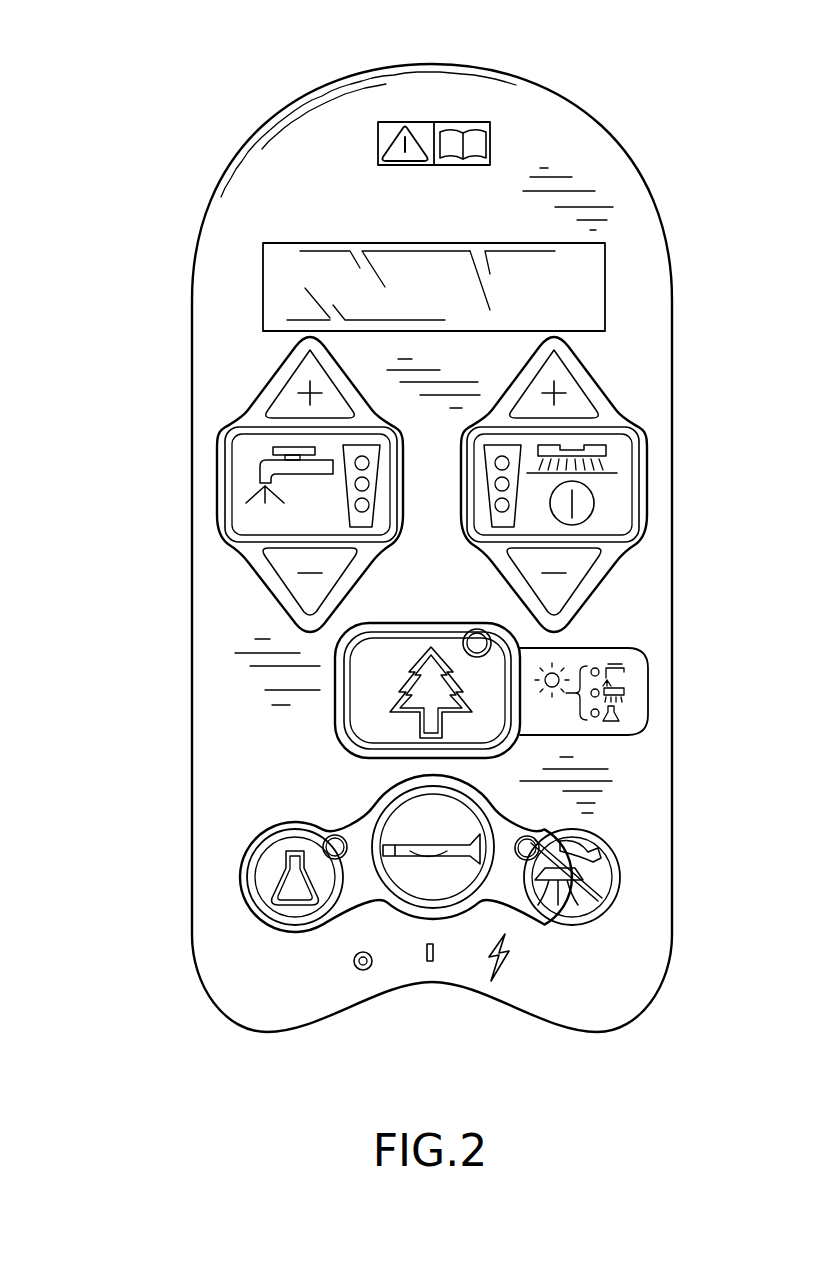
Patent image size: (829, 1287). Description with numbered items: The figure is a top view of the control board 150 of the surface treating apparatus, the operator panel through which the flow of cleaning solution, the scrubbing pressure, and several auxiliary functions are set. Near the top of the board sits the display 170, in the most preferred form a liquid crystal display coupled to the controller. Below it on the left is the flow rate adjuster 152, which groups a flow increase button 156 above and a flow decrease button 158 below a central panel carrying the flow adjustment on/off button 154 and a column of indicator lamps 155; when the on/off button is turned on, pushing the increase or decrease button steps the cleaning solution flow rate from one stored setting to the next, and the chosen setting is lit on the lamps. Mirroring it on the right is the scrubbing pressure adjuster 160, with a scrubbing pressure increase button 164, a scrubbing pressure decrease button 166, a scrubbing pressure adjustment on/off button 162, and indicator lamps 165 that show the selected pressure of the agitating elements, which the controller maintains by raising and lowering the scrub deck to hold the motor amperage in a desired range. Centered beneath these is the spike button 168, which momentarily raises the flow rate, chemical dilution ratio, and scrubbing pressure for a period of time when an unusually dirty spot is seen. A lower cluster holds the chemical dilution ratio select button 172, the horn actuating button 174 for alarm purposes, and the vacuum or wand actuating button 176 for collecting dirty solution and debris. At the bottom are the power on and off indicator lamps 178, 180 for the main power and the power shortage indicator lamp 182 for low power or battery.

The control board 150 is at (626, 116).
The flow rate adjuster 152 is at (235, 484).
The flow adjustment on/off button 154 is at (287, 520).
The indicator lamps 155 is at (347, 448).
The flow increase button 156 is at (298, 378).
The flow decrease button 158 is at (298, 564).
The scrubbing pressure adjuster 160 is at (619, 484).
The scrubbing pressure adjustment on/off button 162 is at (620, 485).
The scrubbing pressure increase button 164 is at (572, 382).
The indicator lamps 165 is at (517, 447).
The scrubbing pressure decrease button 166 is at (571, 587).
The spike button 168 is at (405, 683).
The display 170 is at (288, 278).
The chemical dilution ratio select button 172 is at (247, 862).
The horn actuating button 174 is at (465, 807).
The vacuum or wand actuating button 176 is at (612, 905).
The power on and off indicator lamp 178 is at (357, 969).
The power on and off indicator lamp 180 is at (429, 962).
The power shortage indicator lamp 182 is at (502, 975).